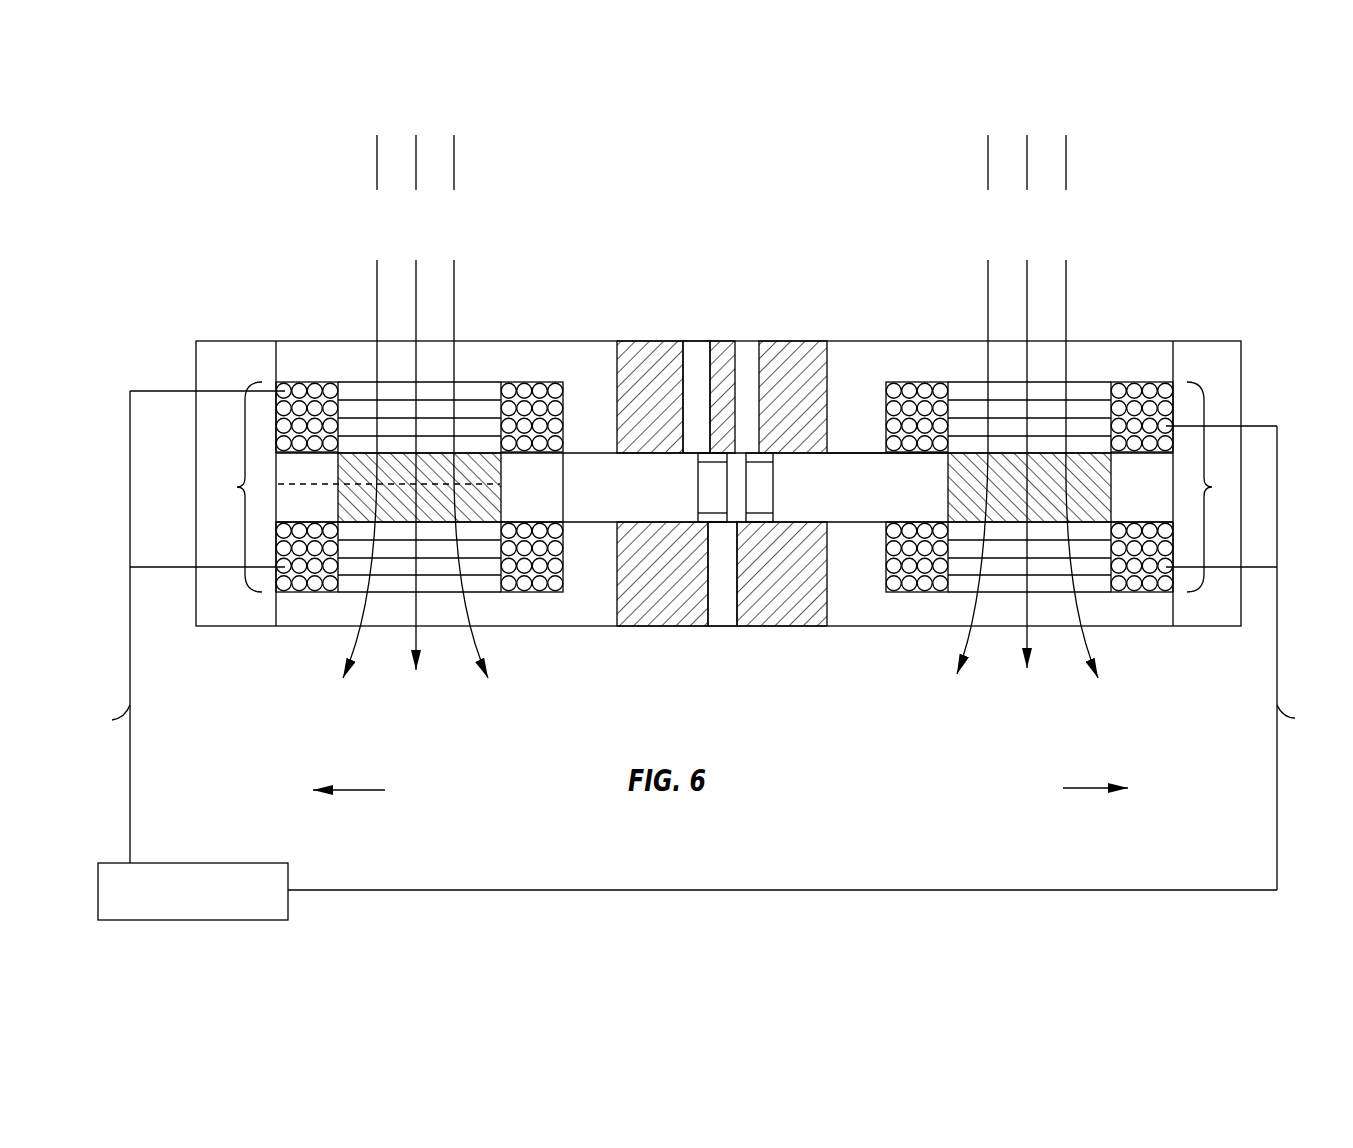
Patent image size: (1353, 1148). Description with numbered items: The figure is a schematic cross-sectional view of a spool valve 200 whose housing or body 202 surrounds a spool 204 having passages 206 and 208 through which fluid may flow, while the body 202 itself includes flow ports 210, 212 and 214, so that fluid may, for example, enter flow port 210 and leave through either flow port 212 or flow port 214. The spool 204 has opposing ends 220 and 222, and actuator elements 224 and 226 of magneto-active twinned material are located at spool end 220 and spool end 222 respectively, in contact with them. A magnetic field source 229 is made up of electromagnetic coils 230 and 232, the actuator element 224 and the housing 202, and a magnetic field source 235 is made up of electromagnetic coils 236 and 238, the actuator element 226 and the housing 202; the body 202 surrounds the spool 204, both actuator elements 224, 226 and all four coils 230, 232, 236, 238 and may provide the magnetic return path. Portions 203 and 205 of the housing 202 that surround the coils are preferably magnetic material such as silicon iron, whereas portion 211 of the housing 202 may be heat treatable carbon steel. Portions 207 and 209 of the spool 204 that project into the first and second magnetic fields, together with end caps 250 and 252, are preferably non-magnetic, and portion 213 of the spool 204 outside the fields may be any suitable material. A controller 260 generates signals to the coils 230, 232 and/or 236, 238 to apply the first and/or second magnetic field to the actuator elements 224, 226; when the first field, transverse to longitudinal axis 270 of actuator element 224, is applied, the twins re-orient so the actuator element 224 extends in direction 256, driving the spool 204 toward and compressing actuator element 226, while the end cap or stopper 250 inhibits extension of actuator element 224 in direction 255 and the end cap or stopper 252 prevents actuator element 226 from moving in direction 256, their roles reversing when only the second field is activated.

The spool valve 200 is at (1086, 101).
The housing or body 202 is at (1097, 341).
The portion of valve body 203 is at (299, 335).
The spool 204 is at (853, 463).
The portion of valve body 205 is at (1079, 337).
The passage 206 is at (682, 523).
The portion of spool 207 is at (515, 502).
The passage 208 is at (783, 606).
The portion of spool 209 is at (918, 503).
The flow port 210 is at (725, 613).
The portion of housing 211 is at (719, 342).
The flow port 212 is at (696, 340).
The portion of spool 213 is at (653, 447).
The flow port 214 is at (748, 341).
The spool end 220 is at (502, 472).
The spool end 222 is at (940, 455).
The actuator element 224 is at (397, 502).
The actuator element 226 is at (1093, 487).
The magnetic field source 229 is at (262, 382).
The electromagnetic coil 230 is at (298, 392).
The electromagnetic coil 232 is at (300, 577).
The magnetic field source 235 is at (1203, 380).
The electromagnetic coil 236 is at (923, 392).
The electromagnetic coil 238 is at (942, 587).
The end cap or stopper 250 is at (215, 452).
The end cap or stopper 252 is at (1228, 537).
The direction 255 is at (343, 792).
The direction 256 is at (1096, 790).
The controller 260 is at (185, 863).
The longitudinal axis 270 is at (308, 478).